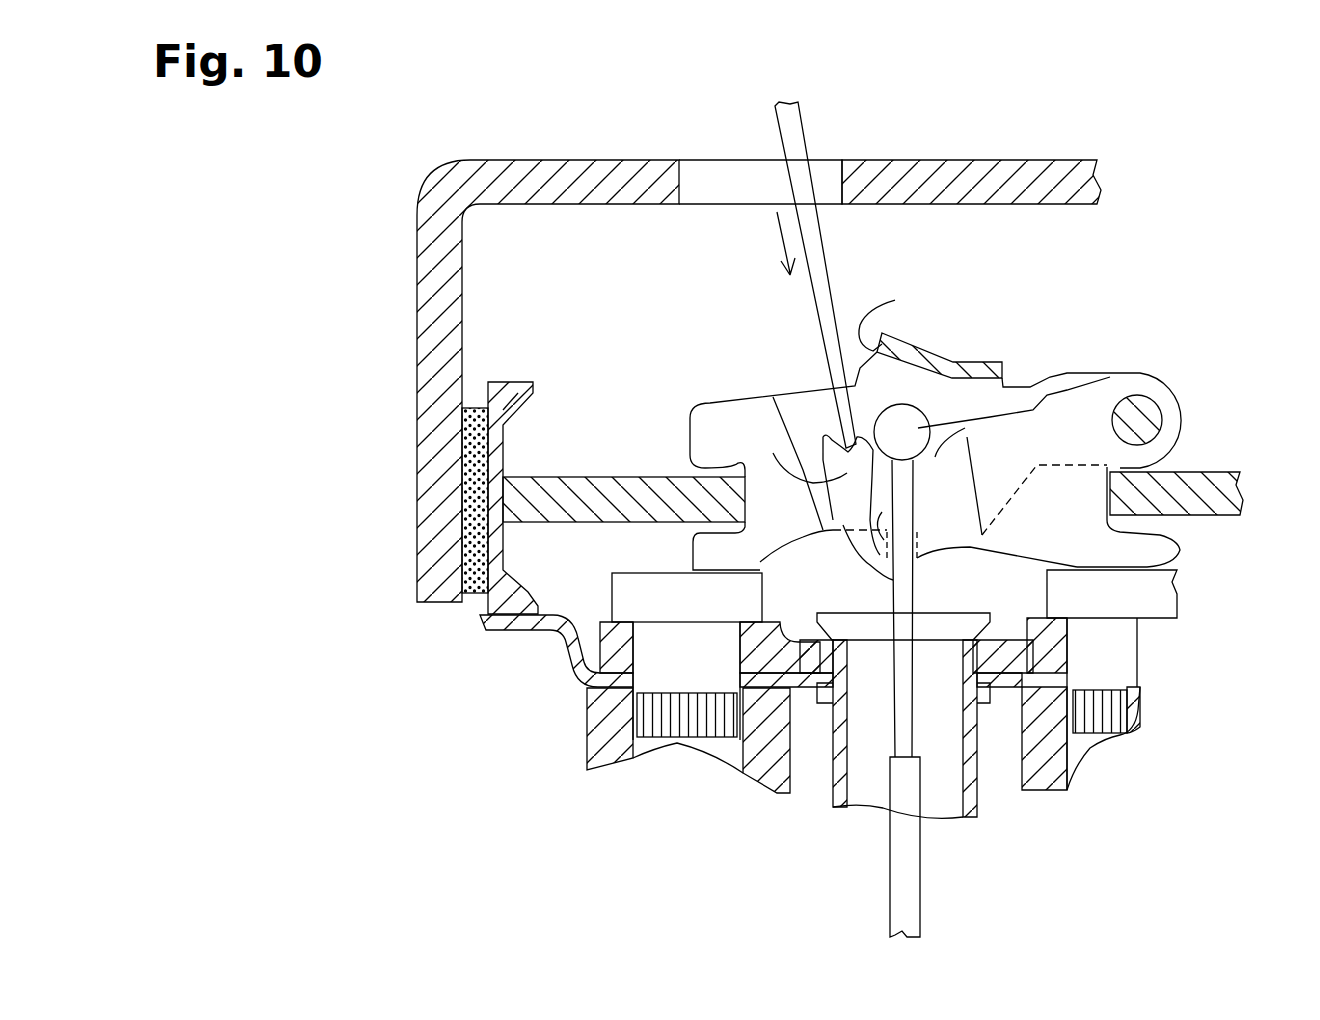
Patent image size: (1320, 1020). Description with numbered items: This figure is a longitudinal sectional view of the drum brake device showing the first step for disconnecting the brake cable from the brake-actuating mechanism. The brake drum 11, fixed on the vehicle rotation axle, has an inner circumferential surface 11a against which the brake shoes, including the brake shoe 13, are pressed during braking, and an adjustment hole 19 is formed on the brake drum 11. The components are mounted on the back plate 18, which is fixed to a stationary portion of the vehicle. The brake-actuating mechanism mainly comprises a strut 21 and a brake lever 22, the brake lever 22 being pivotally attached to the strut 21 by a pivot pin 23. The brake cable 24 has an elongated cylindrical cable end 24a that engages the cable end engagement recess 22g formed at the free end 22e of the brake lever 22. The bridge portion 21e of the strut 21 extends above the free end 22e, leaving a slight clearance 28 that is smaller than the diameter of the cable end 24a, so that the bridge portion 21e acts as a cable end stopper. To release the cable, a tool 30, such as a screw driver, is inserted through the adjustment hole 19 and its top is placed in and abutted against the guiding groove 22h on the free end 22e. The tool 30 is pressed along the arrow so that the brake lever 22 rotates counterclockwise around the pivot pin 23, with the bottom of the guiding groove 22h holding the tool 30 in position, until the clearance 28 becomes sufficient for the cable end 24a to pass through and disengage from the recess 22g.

The brake drum 11 is at (497, 158).
The inner circumferential surface 11a is at (475, 345).
The brake shoe 13 is at (514, 381).
The back plate 18 is at (492, 632).
The adjustment hole 19 is at (713, 172).
The strut 21 is at (710, 402).
The bridge portion 21e is at (950, 358).
The brake lever 22 is at (1197, 555).
The free end 22e is at (800, 480).
The cable end engagement recess 22g is at (903, 585).
The guiding groove 22h is at (833, 405).
The pivot pin 23 is at (1160, 420).
The brake cable 24 is at (938, 869).
The cable end 24a is at (1007, 383).
The clearance 28 is at (870, 320).
The tool 30 is at (797, 130).